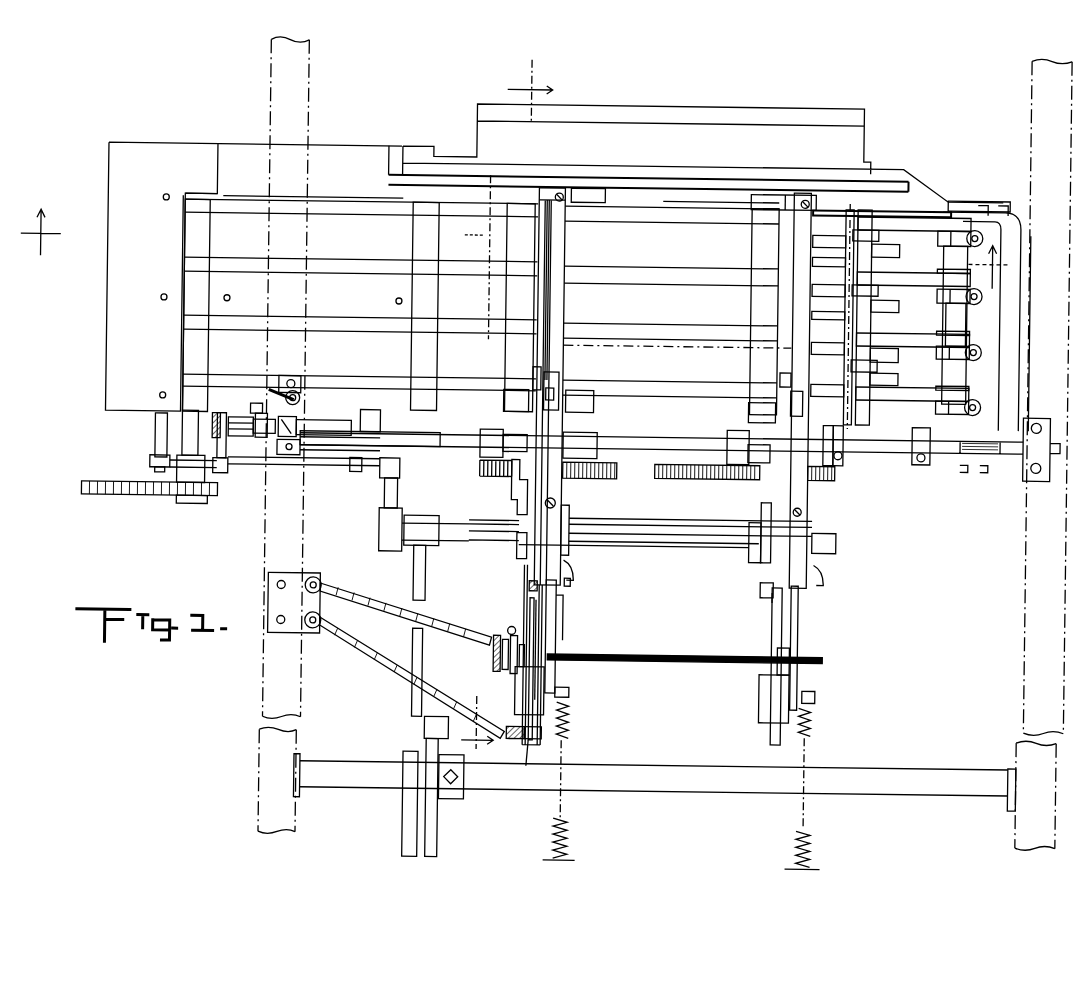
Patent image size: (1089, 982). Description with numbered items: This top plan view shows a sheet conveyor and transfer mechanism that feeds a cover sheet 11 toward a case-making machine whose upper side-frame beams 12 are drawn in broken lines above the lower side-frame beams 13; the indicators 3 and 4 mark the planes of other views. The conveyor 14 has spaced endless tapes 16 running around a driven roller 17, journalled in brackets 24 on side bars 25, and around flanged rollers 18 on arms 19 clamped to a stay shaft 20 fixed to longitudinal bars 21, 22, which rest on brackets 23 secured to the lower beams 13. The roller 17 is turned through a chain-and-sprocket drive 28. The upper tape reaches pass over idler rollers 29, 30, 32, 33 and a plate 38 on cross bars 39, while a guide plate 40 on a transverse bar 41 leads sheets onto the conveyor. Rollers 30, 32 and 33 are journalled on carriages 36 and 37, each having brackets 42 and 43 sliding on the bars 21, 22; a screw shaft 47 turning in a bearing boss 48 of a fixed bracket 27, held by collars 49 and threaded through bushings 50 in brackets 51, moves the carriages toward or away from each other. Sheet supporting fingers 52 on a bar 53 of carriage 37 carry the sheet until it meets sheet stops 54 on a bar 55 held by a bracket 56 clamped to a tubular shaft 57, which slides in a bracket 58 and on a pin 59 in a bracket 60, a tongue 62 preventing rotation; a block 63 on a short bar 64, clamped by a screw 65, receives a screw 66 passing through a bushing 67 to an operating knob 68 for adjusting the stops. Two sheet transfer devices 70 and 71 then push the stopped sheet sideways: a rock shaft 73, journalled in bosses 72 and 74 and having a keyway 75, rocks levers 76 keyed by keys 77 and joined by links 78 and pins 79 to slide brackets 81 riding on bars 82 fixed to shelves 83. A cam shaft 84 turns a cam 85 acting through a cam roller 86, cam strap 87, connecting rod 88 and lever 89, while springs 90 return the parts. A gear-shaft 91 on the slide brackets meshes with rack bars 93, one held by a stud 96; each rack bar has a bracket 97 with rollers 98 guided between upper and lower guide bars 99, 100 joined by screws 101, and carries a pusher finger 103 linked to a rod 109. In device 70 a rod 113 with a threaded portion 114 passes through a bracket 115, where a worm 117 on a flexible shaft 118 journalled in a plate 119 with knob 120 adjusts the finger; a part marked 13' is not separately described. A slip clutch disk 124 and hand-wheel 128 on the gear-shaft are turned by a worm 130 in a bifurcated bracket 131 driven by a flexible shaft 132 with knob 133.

The section line 3- 3 is at (514, 249).
The section line 4- 4 is at (507, 411).
The sheet 11 is at (466, 257).
The upper side-frame beams 12 is at (270, 690).
The lower side-frame beams 13 is at (614, 799).
The pin 13' is at (586, 580).
The conveyor 14 is at (350, 190).
The endless tapes 16 is at (244, 278).
The driven roller 17 is at (196, 296).
The flanged rollers 18 is at (952, 206).
The arms 19 is at (935, 238).
The stay shaft 20 is at (958, 362).
The bar 21 is at (698, 206).
The bar 22 is at (666, 447).
The brackets 23 is at (1012, 284).
The brackets 24 is at (150, 458).
The side bars 25 is at (150, 462).
The bracket 27 is at (430, 432).
The chain-and-sprocket drive 28 is at (126, 503).
The idler roller 29 is at (420, 296).
The idler roller 30 is at (500, 252).
The idler roller 32 is at (586, 236).
The idler roller 33 is at (755, 250).
The carriage 36 is at (509, 491).
The carriage 37 is at (753, 496).
The plate 38 is at (246, 150).
The bars 39 is at (222, 477).
The plate 40 is at (105, 352).
The transverse bar 41 is at (155, 422).
The bracket 42 is at (590, 186).
The bracket 43 is at (590, 432).
The screw shaft 47 is at (312, 470).
The bearing boss 48 is at (396, 488).
The collars 49 is at (356, 474).
The threaded bushings 50 is at (637, 448).
The brackets 51 is at (518, 500).
The sheet supporting fingers 52 is at (885, 240).
The bar 53 is at (846, 380).
The sheet stops 54 is at (850, 236).
The bar 55 is at (850, 407).
The bracket 56 is at (892, 428).
The tubular shaft 57 is at (942, 455).
The bracket 58 is at (282, 379).
The pin 59 is at (1006, 460).
The bracket 60 is at (1046, 409).
The tongue 62 is at (310, 435).
The block 63 is at (264, 409).
The short bar 64 is at (332, 423).
The clamp screw 65 is at (298, 395).
The screw 66 is at (256, 439).
The bushing 67 is at (232, 421).
The operating knob 68 is at (210, 424).
The sheet transfer device 70 is at (572, 603).
The sheet transfer device 71 is at (764, 603).
The bearing bosses 72 is at (576, 565).
The rock shaft 73 is at (664, 545).
The bearing boss 74 is at (392, 553).
The keyway 75 is at (658, 530).
The levers 76 is at (570, 514).
The keys 77 is at (516, 540).
The links 78 is at (558, 644).
The pins 79 is at (575, 694).
The slide brackets 81 is at (574, 712).
The horizontal bars 82 is at (531, 594).
The shelf 83 is at (520, 558).
The cam shaft 84 is at (674, 775).
The cam 85 is at (440, 830).
The cam roller 86 is at (430, 724).
The cam strap 87 is at (407, 814).
The connecting rod 88 is at (418, 638).
The lever 89 is at (428, 550).
The extension coil springs 90 is at (572, 836).
The gear-shaft 91 is at (664, 654).
The rack bars 93 is at (540, 626).
The headed stud 96 is at (792, 652).
The bracket 97 is at (555, 372).
The anti-friction-bearing rollers 98 is at (556, 382).
The upper guide bars 99 is at (552, 248).
The lower guide bars 100 is at (582, 402).
The machine screws 101 is at (556, 192).
The pusher finger 103 is at (532, 370).
The rod 109 is at (546, 298).
The rod 113 is at (547, 668).
The threaded portion 114 is at (534, 764).
The bracket 115 is at (545, 732).
The worm 117 is at (516, 740).
The flexible shaft 118 is at (378, 664).
The plate 119 is at (290, 636).
The operating knob 120 is at (316, 633).
The metallic disk 124 is at (510, 665).
The hand-wheel 128 is at (496, 662).
The worm 130 is at (513, 626).
The bifurcated bracket 131 is at (544, 640).
The flexible shaft 132 is at (452, 624).
The operating knob 133 is at (318, 581).